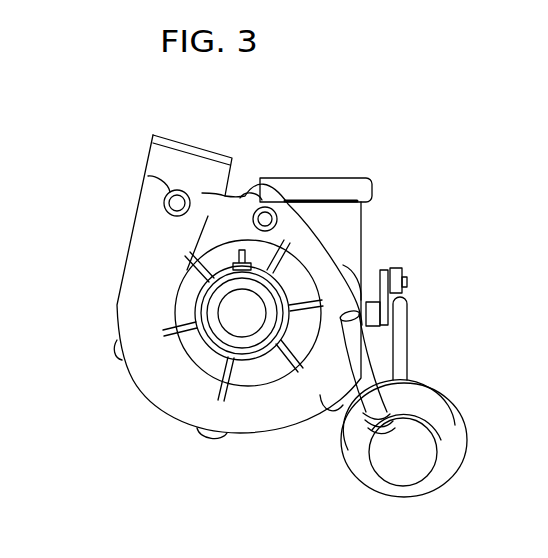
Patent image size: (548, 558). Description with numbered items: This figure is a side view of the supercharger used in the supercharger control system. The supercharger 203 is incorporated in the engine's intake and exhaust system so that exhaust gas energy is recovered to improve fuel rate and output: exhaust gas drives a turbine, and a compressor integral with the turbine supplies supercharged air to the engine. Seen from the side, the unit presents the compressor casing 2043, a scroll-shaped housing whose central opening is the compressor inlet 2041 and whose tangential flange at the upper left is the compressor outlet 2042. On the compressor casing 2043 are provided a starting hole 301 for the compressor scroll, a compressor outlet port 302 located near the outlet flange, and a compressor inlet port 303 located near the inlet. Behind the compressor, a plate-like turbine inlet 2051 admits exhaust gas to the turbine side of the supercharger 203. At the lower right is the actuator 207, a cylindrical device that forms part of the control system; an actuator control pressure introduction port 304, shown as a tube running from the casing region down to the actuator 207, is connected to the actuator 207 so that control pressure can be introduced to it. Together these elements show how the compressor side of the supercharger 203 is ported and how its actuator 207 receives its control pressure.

The supercharger 203 is at (120, 426).
The compressor inlet 2041 is at (218, 325).
The compressor outlet 2042 is at (190, 136).
The compressor casing 2043 is at (120, 312).
The turbine inlet 2051 is at (356, 178).
The actuator 207 is at (418, 478).
The starting hole for the compressor scroll 301 is at (244, 197).
The compressor outlet port 302 is at (164, 201).
The compressor inlet port 303 is at (237, 253).
The actuator control pressure introduction port 304 is at (340, 395).